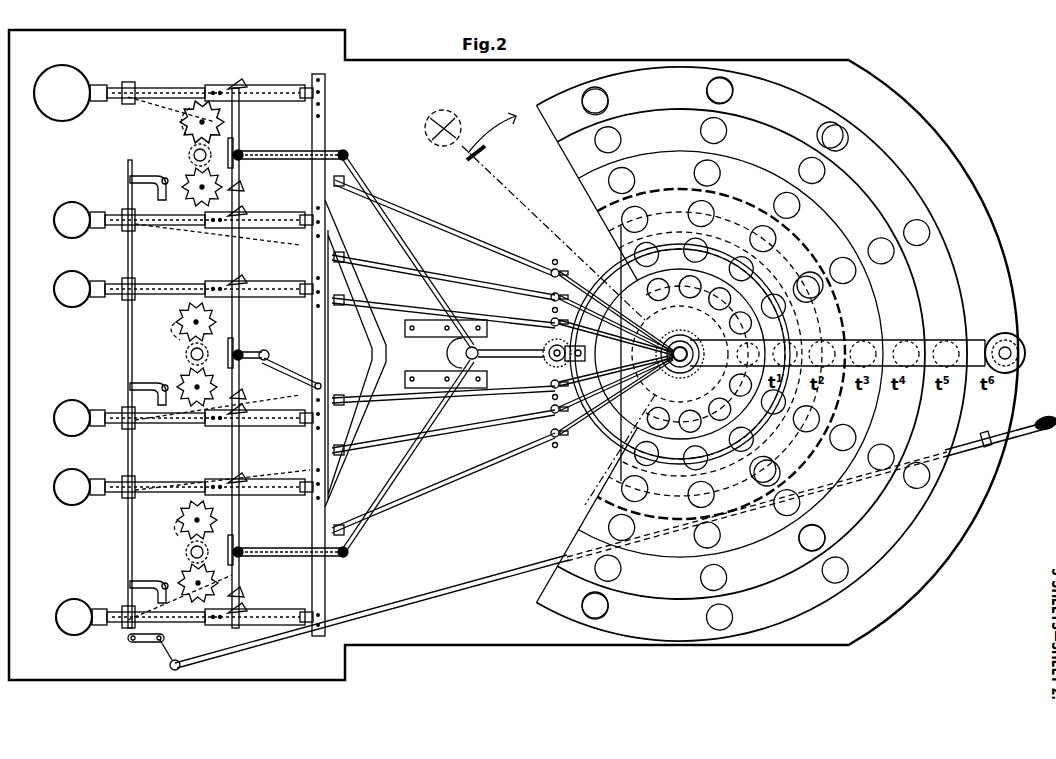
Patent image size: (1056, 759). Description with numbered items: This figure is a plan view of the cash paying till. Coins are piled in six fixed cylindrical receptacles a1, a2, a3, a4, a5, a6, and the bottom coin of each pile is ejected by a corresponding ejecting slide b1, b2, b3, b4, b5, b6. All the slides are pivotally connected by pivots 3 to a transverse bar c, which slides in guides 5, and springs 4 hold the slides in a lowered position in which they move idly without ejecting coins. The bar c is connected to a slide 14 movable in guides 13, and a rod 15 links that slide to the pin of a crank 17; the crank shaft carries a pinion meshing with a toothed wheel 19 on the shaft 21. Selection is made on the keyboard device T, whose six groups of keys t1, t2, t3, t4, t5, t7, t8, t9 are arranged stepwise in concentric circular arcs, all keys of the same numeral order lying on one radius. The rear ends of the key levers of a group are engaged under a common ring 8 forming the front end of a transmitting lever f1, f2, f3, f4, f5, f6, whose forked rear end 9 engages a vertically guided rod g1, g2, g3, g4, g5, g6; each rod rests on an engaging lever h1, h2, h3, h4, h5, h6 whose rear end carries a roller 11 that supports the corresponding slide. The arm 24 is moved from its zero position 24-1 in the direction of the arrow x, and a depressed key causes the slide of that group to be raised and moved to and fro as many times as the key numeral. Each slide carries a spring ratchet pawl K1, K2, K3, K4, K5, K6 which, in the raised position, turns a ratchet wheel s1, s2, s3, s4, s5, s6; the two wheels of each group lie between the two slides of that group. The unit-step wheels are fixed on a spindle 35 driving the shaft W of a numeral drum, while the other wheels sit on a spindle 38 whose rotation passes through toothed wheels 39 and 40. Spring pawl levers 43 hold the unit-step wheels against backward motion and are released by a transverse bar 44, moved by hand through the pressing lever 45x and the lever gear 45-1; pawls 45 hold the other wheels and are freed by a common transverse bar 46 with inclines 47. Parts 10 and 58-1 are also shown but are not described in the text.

The keyboard device T is at (752, 354).
The key t1 is at (605, 108).
The key t2 is at (708, 98).
The key t3 is at (818, 138).
The key t4 is at (823, 290).
The key t5 is at (947, 340).
The key t7 is at (828, 530).
The key t8 is at (754, 470).
The key t9 is at (590, 592).
The shaft 21 is at (681, 345).
The common ring 8 is at (676, 370).
The arm 24 is at (995, 340).
The pressing lever 45x is at (1000, 440).
The lever gear 45-1 is at (415, 608).
The toothed wheel 19 is at (612, 438).
The zero or initial position 24-1 is at (461, 128).
The arrow x is at (517, 159).
The vertically movable rod g1 is at (554, 268).
The vertically movable rod g2 is at (550, 297).
The vertically movable rod g3 is at (551, 323).
The vertically movable rod g4 is at (551, 383).
The vertically movable rod g5 is at (551, 412).
The vertically movable rod g6 is at (555, 438).
The slotted or forked end 9 is at (542, 357).
The transmitting lever f1 is at (616, 306).
The transmitting lever f2 is at (616, 322).
The transmitting lever f3 is at (616, 335).
The transmitting lever f4 is at (616, 370).
The transmitting lever f5 is at (616, 383).
The transmitting lever f6 is at (616, 399).
The pivot 10 is at (548, 357).
The crank 17 is at (586, 352).
The rod 15 is at (508, 350).
The guides 13 is at (406, 330).
The slide 14 is at (425, 354).
The pivots 3 is at (310, 608).
The springs 4 is at (287, 514).
The transverse bar c is at (355, 353).
The transversely movable bar 44 is at (128, 353).
The common transverse bar 46 is at (240, 260).
The coin receptacle a1 is at (62, 66).
The coin receptacle a2 is at (72, 202).
The coin receptacle a3 is at (72, 271).
The coin receptacle a4 is at (72, 400).
The coin receptacle a5 is at (72, 469).
The coin receptacle a6 is at (74, 599).
The ejecting slide b1 is at (172, 86).
The ejecting slide b2 is at (158, 228).
The ejecting slide b3 is at (158, 297).
The ejecting slide b4 is at (158, 426).
The ejecting slide b5 is at (158, 495).
The ejecting slide b6 is at (190, 626).
The roller 11 is at (124, 497).
The spring ratchet pawl K1 is at (248, 92).
The spring ratchet pawl K2 is at (248, 208).
The spring ratchet pawl K3 is at (248, 290).
The spring ratchet pawl K4 is at (240, 424).
The spring ratchet pawl K5 is at (248, 488).
The spring ratchet pawl K6 is at (248, 606).
The ratchet wheel s1 is at (180, 122).
The ratchet wheel s2 is at (201, 187).
The ratchet wheel s3 is at (196, 322).
The ratchet wheel s4 is at (197, 387).
The ratchet wheel s5 is at (197, 520).
The ratchet wheel s6 is at (190, 564).
The toothed wheel 39 is at (182, 518).
The spindle 38 is at (214, 520).
The spindle W is at (192, 548).
The pawls 45 is at (233, 540).
The toothed wheel 40 is at (225, 354).
The inclines 47 is at (250, 550).
The guides 5 is at (346, 556).
The spring pawl levers 43 is at (148, 580).
The spindle 35 is at (244, 386).
The link 58-1 is at (292, 378).
The engaging lever h1 is at (392, 200).
The engaging lever h2 is at (392, 265).
The engaging lever h3 is at (390, 306).
The engaging lever h4 is at (392, 397).
The engaging lever h5 is at (390, 444).
The engaging lever h6 is at (392, 507).